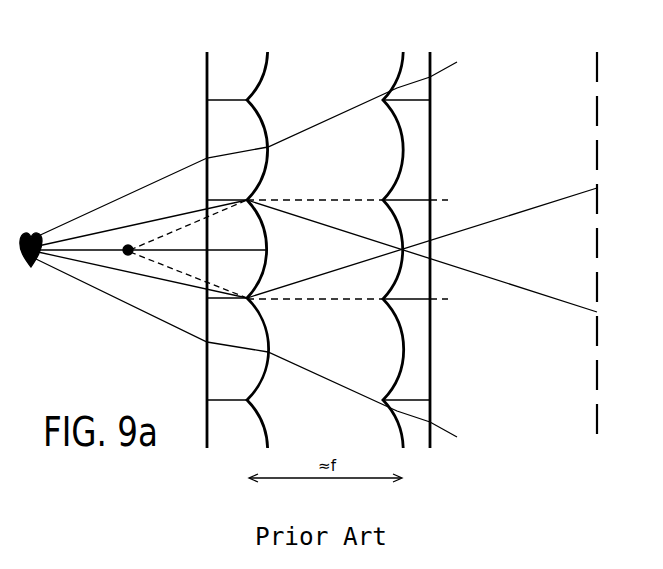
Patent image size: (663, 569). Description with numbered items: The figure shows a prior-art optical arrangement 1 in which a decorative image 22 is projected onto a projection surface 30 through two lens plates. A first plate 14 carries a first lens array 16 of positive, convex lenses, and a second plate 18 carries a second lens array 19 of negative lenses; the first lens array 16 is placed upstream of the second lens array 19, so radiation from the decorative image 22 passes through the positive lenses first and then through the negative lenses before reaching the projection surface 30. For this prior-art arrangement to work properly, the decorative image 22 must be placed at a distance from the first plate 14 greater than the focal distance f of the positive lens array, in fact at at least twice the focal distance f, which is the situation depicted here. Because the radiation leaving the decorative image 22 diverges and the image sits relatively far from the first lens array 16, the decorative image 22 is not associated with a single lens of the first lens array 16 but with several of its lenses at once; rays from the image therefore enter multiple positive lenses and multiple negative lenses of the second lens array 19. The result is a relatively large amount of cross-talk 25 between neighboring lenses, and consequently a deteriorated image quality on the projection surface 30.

The optical arrangement 1 is at (104, 66).
The first plate 14 is at (218, 77).
The first lens array 16 is at (267, 118).
The second plate 18 is at (432, 146).
The second lens array 19 is at (396, 153).
The decorative image 22 is at (33, 270).
The cross-talk 25 is at (233, 150).
The projection surface 30 is at (596, 72).
The focal distance f is at (128, 244).